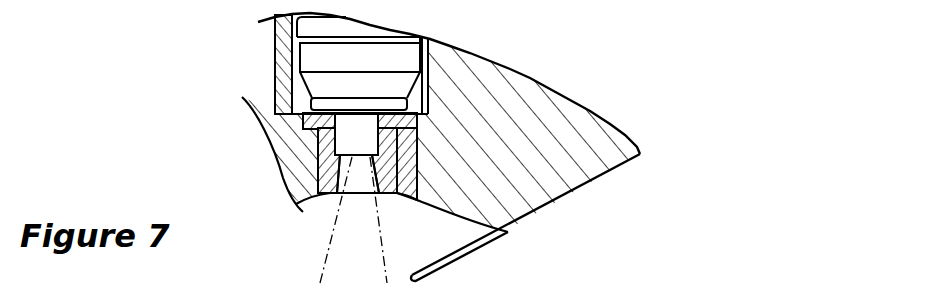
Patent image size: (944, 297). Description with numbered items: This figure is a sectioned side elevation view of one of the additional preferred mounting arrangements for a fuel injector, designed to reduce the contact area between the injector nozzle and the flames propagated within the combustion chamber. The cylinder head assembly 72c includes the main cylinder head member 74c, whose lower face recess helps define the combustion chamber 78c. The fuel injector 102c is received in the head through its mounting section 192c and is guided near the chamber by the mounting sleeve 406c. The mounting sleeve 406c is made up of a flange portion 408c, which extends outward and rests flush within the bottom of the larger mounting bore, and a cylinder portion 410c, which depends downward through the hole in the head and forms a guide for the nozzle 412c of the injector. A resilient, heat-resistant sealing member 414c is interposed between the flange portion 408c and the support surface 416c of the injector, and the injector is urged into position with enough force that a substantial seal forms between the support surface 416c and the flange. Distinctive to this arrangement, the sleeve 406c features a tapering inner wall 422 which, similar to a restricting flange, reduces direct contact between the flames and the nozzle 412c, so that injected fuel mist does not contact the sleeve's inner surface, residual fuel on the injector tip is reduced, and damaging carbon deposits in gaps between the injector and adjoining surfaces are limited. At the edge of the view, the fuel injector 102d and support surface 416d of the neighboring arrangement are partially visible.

The cylinder head assembly 72c is at (592, 98).
The fuel injector 102c is at (381, 31).
The main cylinder head member 74c is at (560, 198).
The combustion chamber 78c is at (470, 253).
The mounting section 192c is at (273, 67).
The sealing member 414c is at (272, 100).
The support surface 416c is at (363, 108).
The flange portion 408c is at (303, 128).
The mounting sleeve 406c is at (313, 165).
The cylinder portion 410c is at (328, 200).
The nozzle 412c is at (365, 145).
The tapering inner wall 422 is at (443, 147).
The fuel injector 102d is at (232, 287).
The support surface 416d is at (487, 224).